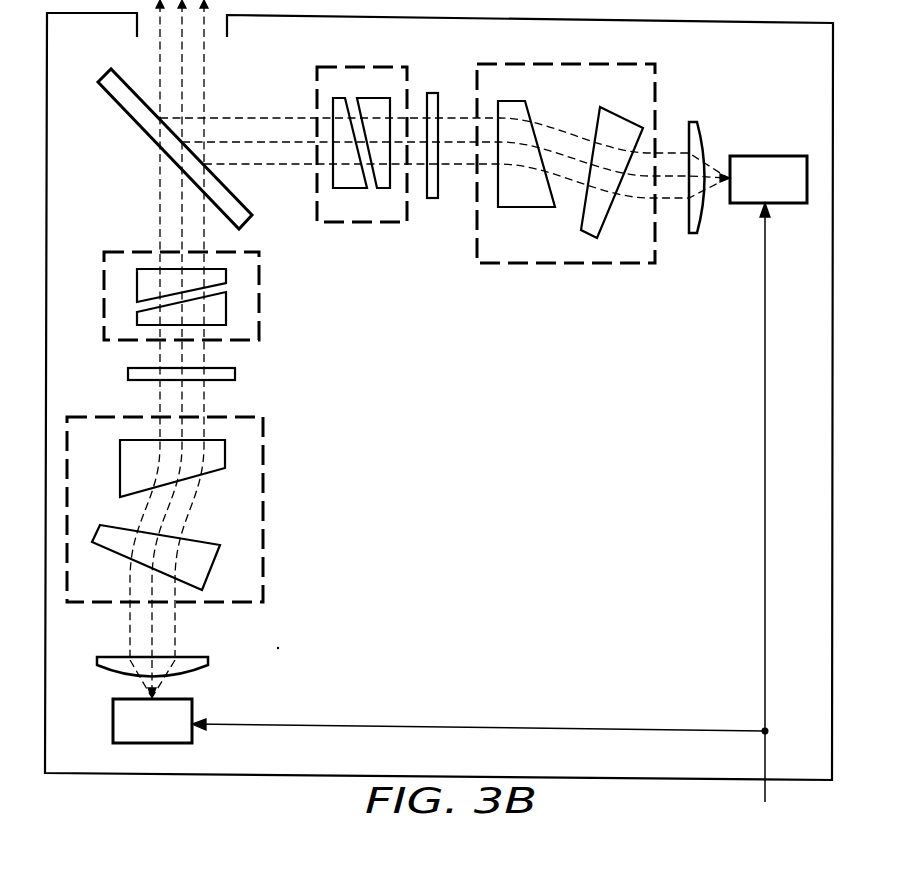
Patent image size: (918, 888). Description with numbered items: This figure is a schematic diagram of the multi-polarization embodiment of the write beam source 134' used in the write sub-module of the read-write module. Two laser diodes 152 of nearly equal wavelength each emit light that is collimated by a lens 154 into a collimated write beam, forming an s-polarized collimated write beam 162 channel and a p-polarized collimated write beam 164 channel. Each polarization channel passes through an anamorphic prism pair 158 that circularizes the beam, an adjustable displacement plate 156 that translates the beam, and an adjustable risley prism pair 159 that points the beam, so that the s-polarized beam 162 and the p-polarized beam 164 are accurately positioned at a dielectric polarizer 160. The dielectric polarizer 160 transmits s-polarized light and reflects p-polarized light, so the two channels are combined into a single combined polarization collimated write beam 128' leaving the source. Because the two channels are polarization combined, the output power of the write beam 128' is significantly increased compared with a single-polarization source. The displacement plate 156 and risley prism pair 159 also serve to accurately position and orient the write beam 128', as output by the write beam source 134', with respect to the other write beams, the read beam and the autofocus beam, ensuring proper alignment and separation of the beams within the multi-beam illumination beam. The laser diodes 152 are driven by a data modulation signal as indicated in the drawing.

The combined polarization collimated write beam 128' is at (221, 349).
The write beam source 134' is at (439, 421).
The laser diode 152 is at (748, 205).
The lens 154 is at (700, 128).
The adjustable displacement plate 156 is at (435, 92).
The anamorphic prism pair 158 is at (570, 263).
The adjustable risley prism pair 159 is at (370, 222).
The dielectric polarizer 160 is at (138, 124).
The s-polarized collimated write beam 162 is at (208, 635).
The p-polarized collimated write beam 164 is at (667, 256).